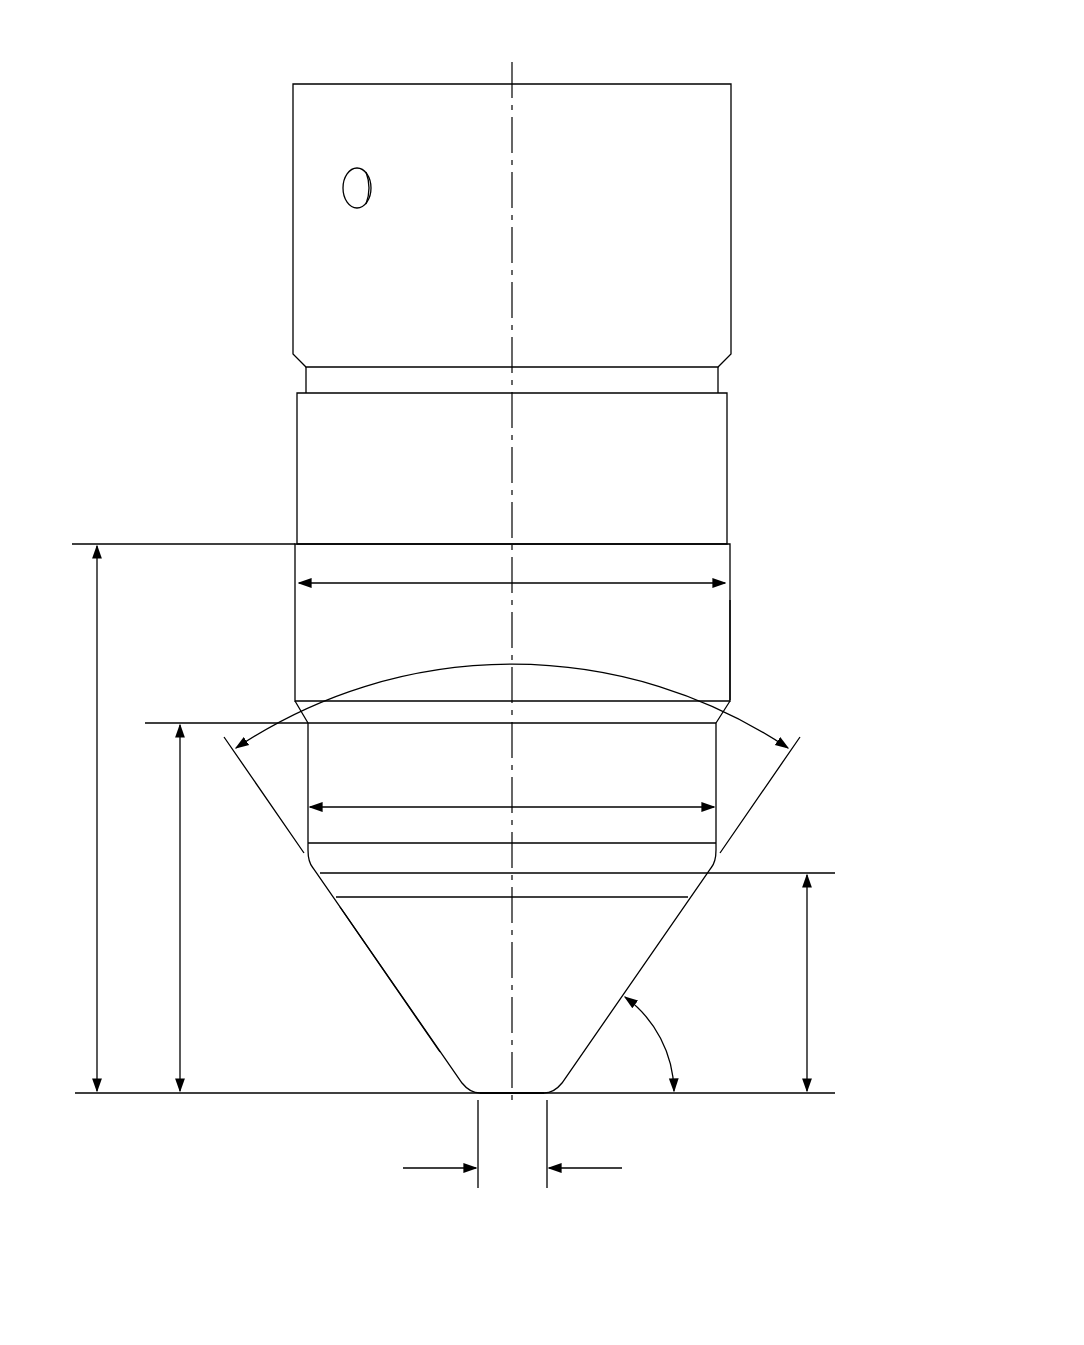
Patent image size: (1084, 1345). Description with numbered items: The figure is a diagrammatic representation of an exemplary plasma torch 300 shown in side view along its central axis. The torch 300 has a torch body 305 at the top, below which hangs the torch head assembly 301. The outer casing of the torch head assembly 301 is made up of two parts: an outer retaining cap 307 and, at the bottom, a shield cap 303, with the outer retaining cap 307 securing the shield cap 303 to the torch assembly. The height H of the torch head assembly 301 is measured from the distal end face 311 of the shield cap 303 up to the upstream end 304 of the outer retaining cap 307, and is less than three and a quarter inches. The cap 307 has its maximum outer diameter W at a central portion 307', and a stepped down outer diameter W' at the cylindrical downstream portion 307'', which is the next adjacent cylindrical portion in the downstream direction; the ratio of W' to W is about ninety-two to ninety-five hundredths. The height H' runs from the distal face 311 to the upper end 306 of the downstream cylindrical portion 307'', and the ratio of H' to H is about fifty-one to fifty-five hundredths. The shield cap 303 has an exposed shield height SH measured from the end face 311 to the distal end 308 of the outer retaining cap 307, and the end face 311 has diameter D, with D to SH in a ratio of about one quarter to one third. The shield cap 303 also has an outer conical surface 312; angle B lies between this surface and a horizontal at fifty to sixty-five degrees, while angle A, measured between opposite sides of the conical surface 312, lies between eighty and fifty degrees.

The plasma torch 300 is at (816, 114).
The torch head assembly 301 is at (730, 602).
The shield cap 303 is at (415, 947).
The upstream end of the outer retaining cap 304 is at (675, 394).
The torch body 305 is at (731, 232).
The upper end of the downstream cylindrical portion 306 is at (643, 724).
The outer retaining cap 307 is at (564, 468).
The central portion of the cap 307' is at (786, 650).
The downstream cylindrical portion of the cap 307'' is at (581, 786).
The distal end of the outer retaining cap 308 is at (662, 872).
The end face of the shield cap 311 is at (528, 1094).
The conical surface 312 is at (402, 996).